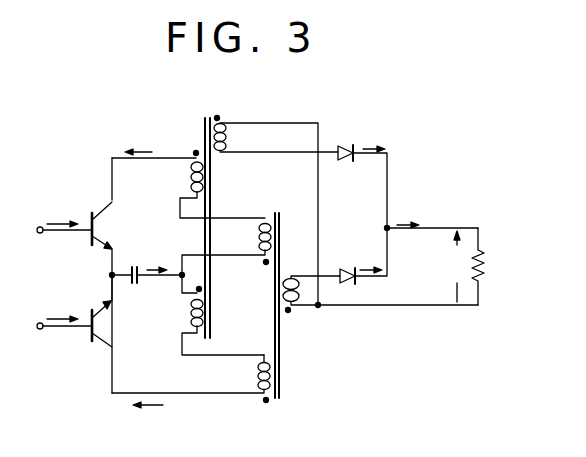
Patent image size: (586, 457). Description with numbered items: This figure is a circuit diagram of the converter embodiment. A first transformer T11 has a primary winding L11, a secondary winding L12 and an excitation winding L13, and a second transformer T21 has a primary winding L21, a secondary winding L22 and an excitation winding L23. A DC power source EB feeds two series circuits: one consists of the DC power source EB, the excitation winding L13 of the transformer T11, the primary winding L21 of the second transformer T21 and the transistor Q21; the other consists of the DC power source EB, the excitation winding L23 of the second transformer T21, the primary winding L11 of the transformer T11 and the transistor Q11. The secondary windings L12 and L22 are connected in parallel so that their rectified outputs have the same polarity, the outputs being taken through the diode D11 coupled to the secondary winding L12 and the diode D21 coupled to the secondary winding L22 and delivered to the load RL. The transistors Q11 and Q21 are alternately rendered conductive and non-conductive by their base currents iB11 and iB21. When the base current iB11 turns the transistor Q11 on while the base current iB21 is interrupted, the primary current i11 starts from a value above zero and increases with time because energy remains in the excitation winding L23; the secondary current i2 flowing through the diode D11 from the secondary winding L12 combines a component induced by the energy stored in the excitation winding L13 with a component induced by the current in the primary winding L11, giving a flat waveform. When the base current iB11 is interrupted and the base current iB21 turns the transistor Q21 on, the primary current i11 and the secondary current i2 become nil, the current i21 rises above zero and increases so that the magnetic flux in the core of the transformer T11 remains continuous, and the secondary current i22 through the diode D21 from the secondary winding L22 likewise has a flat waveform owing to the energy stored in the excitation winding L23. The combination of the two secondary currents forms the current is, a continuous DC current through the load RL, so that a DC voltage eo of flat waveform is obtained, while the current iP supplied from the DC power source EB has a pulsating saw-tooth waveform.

The transistor Q21 is at (88, 225).
The transistor Q11 is at (90, 311).
The DC power source EB is at (134, 291).
The second transformer T21 is at (213, 216).
The transformer T11 is at (279, 297).
The secondary winding L22 is at (236, 134).
The primary winding L21 is at (181, 172).
The excitation winding L13 is at (249, 244).
The excitation winding L23 is at (180, 309).
The primary winding L11 is at (252, 379).
The secondary winding L12 is at (299, 282).
The diode D21 is at (344, 142).
The diode D11 is at (348, 265).
The load RL is at (491, 266).
The DC voltage eo is at (460, 266).
The base current iB21 is at (62, 214).
The base current iB11 is at (62, 309).
The secondary current i21 is at (143, 142).
The primary current i11 is at (148, 421).
The current supplied from the DC power source iP is at (156, 260).
The secondary current i22 is at (376, 139).
The current is is at (408, 215).
The secondary current i2 is at (371, 260).